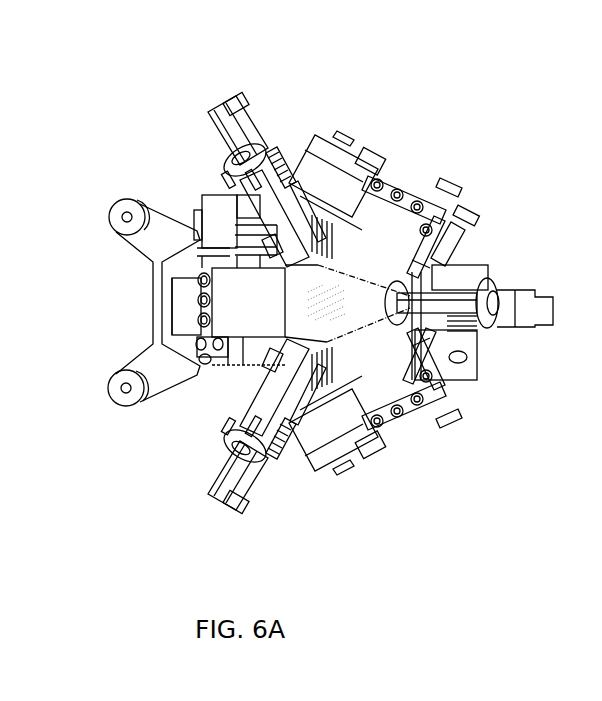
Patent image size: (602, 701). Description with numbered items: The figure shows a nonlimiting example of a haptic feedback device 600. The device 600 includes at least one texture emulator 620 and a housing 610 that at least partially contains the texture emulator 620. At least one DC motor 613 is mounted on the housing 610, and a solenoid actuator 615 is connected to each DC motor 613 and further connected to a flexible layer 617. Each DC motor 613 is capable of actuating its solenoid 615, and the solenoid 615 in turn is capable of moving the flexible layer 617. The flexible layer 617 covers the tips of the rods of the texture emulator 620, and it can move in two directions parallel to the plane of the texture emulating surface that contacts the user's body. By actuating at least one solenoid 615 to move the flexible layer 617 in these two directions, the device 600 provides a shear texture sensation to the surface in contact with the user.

The haptic feedback device 600 is at (136, 128).
The housing 610 is at (477, 214).
The DC motor 613 is at (305, 152).
The solenoid actuator 615 is at (405, 414).
The flexible layer 617 is at (353, 296).
The texture emulator 620 is at (243, 366).